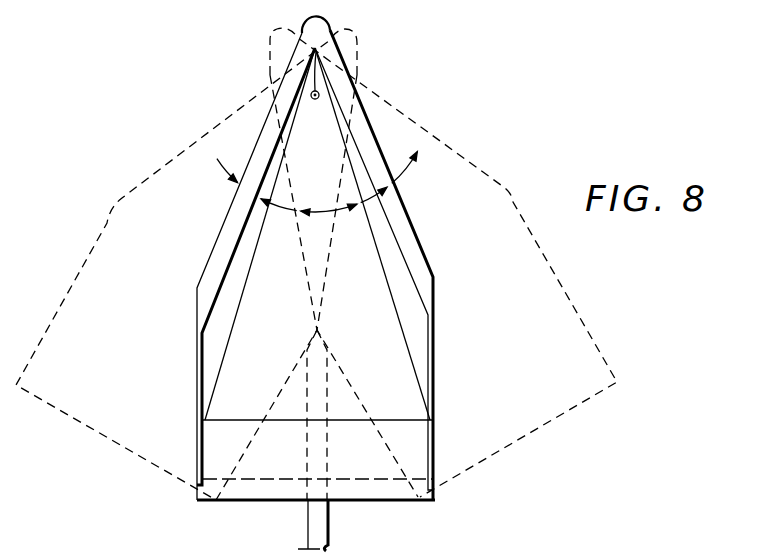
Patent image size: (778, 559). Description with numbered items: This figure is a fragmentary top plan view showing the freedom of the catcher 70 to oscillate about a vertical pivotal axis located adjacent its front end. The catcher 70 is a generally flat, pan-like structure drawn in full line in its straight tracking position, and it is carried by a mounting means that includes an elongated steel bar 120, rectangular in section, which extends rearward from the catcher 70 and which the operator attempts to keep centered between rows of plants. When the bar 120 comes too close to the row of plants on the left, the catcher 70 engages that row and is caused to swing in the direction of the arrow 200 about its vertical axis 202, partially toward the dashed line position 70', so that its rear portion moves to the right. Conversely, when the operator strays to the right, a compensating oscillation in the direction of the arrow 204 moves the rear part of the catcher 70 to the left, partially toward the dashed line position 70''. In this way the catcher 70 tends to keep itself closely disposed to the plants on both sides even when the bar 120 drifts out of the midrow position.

The catcher 70 is at (317, 436).
The dashed line position of catcher 70' is at (467, 262).
The dashed line position of catcher 70'' is at (186, 264).
The elongated steel bar 120 is at (333, 537).
The arrow 200 is at (393, 200).
The vertical axis 202 is at (320, 48).
The arrow 204 is at (231, 189).